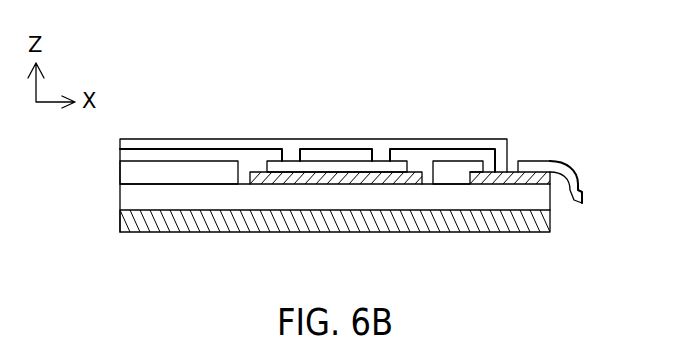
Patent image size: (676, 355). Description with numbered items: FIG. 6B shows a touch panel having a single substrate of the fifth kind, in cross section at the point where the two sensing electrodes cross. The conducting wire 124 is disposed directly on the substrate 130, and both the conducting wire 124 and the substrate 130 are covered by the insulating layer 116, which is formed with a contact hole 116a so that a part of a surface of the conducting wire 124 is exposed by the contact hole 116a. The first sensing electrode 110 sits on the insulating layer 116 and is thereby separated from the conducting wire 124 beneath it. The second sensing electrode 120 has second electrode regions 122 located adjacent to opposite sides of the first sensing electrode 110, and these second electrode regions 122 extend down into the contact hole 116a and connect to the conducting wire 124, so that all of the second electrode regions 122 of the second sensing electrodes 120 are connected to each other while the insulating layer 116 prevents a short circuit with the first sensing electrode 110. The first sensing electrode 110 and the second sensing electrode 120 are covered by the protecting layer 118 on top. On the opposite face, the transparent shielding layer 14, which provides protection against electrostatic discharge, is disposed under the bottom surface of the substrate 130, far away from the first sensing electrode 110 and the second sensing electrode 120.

The transparent shielding layer 14 is at (547, 227).
The first sensing electrode 110 is at (343, 155).
The insulating layer 116 is at (142, 178).
The contact hole 116a is at (243, 178).
The protecting layer 118 is at (152, 138).
The second sensing electrode 120 is at (435, 89).
The second electrode region 122 is at (252, 138).
The conducting wire 124 is at (300, 177).
The substrate 130 is at (547, 207).